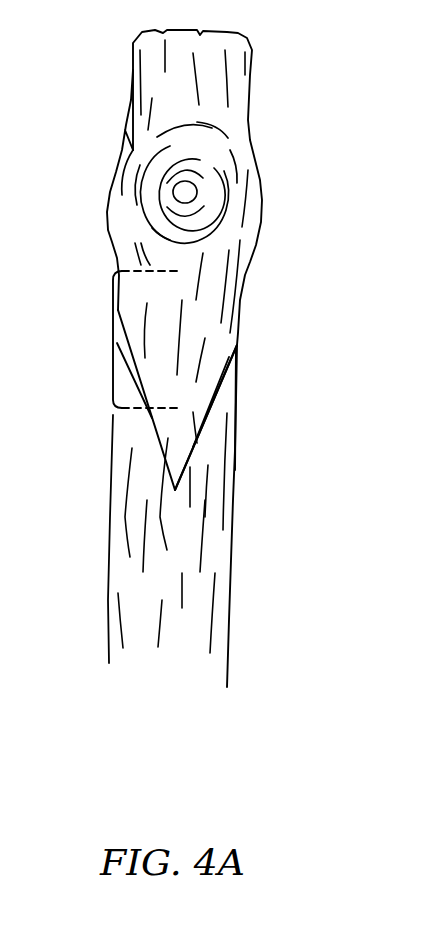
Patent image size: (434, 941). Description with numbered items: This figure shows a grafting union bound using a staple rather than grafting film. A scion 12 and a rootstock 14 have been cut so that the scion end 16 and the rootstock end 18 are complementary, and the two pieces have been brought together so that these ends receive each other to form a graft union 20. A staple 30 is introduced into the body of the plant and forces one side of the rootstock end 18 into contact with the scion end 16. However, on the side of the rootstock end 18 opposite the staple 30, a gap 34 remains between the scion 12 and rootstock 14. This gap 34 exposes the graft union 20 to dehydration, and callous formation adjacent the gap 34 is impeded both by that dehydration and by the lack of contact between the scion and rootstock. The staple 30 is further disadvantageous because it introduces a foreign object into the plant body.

The scion 12 is at (257, 160).
The rootstock 14 is at (233, 515).
The scion end 16 is at (236, 347).
The rootstock end 18 is at (235, 408).
The graft union 20 is at (229, 386).
The staple 30 is at (112, 297).
The gap 34 is at (227, 372).